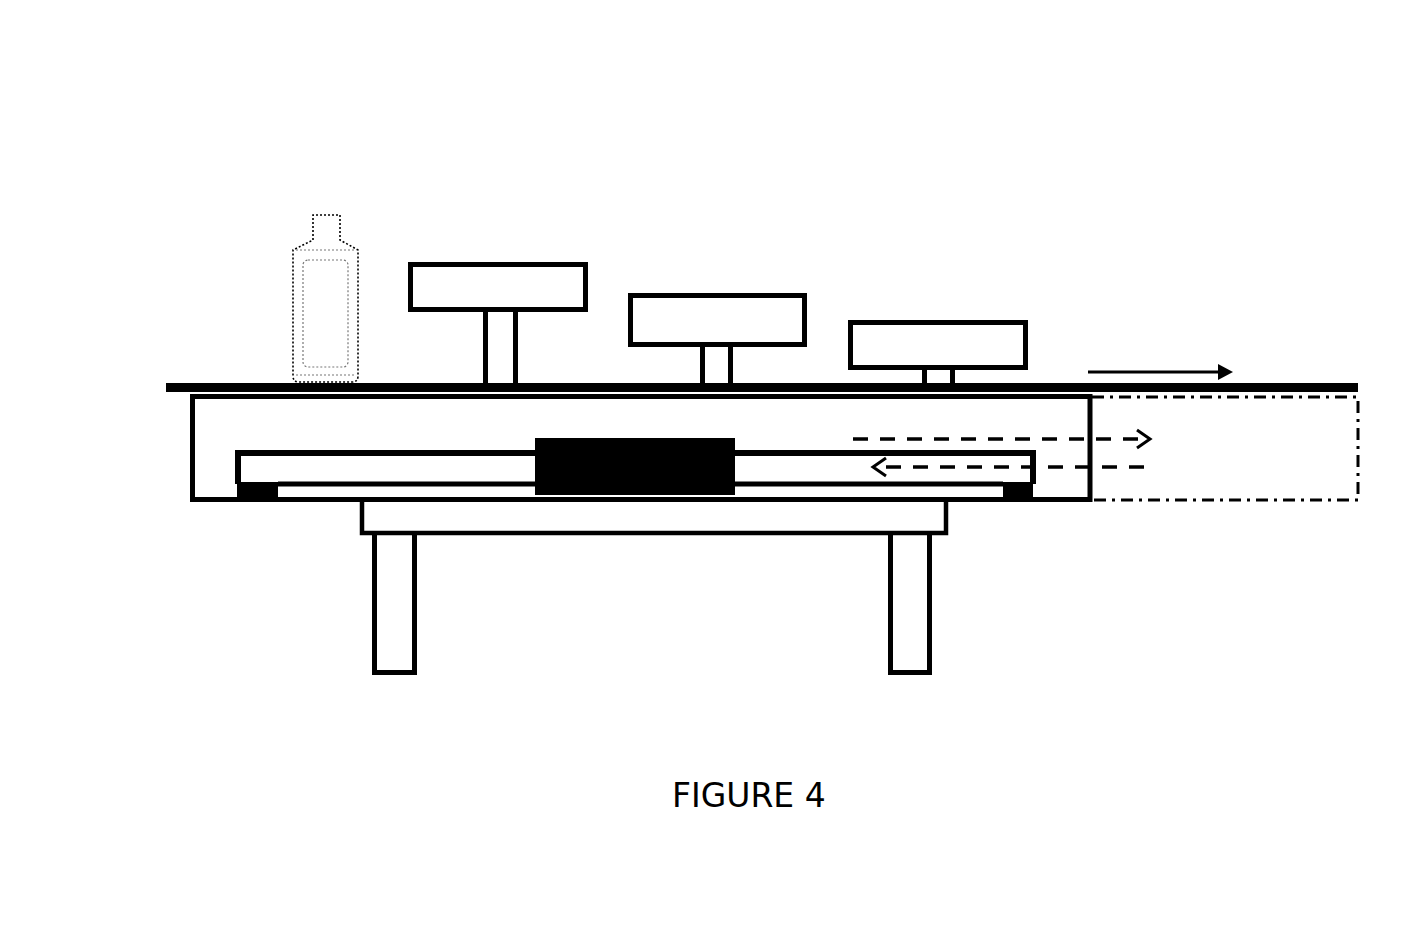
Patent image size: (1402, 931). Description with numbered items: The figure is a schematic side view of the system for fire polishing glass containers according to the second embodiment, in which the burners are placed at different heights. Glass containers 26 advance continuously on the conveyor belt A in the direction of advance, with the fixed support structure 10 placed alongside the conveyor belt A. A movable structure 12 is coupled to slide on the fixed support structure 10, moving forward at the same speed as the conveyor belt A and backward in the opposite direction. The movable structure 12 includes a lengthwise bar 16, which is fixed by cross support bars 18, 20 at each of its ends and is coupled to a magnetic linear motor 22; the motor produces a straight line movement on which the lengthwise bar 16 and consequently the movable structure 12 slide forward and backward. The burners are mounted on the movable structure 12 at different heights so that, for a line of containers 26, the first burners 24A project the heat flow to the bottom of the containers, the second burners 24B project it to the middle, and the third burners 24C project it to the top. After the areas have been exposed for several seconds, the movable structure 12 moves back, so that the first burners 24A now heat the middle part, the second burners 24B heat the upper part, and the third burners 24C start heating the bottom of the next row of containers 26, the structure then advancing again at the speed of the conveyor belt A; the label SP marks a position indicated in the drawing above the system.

The fixed support structure 10 is at (599, 567).
The movable structure 12 is at (217, 450).
The lengthwise bar 16 is at (317, 470).
The cross support bar 18 is at (250, 502).
The cross support bar 20 is at (1018, 502).
The magnetic linear motor 22 is at (670, 495).
The first burners 24A is at (973, 330).
The second burners 24B is at (727, 293).
The third burners 24C is at (518, 277).
The glass containers 26 is at (308, 263).
The conveyor belt A is at (217, 383).
The sample position SP is at (843, 203).